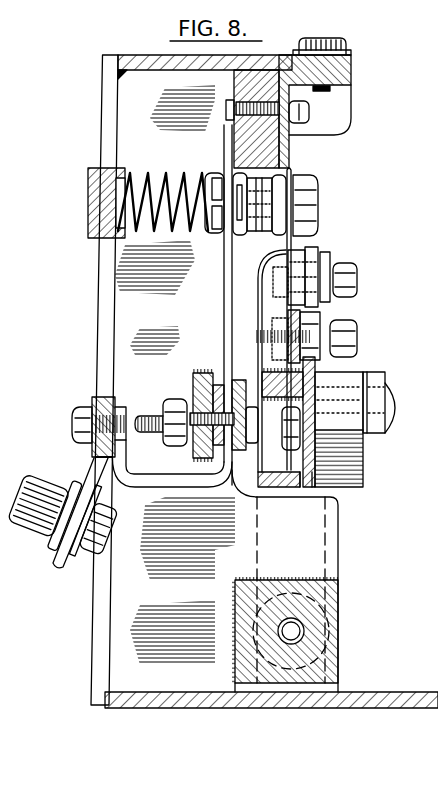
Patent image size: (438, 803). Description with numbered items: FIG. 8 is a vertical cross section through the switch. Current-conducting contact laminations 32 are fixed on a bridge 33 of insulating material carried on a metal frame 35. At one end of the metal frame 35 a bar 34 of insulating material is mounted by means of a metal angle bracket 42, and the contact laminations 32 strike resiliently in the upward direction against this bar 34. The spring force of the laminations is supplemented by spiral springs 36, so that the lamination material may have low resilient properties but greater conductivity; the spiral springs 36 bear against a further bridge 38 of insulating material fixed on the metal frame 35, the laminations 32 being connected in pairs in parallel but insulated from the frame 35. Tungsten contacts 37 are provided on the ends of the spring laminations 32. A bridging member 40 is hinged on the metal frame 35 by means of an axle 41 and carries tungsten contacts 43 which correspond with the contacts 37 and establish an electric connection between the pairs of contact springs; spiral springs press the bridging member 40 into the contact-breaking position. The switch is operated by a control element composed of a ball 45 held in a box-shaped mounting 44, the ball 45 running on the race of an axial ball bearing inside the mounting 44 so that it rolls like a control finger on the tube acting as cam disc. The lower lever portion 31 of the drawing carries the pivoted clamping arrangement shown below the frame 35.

The pivoted lever 31 is at (100, 594).
The contact laminations 32 is at (227, 305).
The bridge 33 is at (193, 392).
The bar 34 is at (233, 153).
The metal frame 35 is at (136, 54).
The spiral springs 36 is at (157, 226).
The tungsten contacts 37 is at (212, 175).
The bridge 38 is at (88, 208).
The bridging member 40 is at (318, 493).
The axle 41 is at (297, 632).
The metal angle bracket 42 is at (352, 73).
The tungsten contacts 43 is at (286, 169).
The box-shaped mounting 44 is at (366, 436).
The ball 45 is at (400, 402).